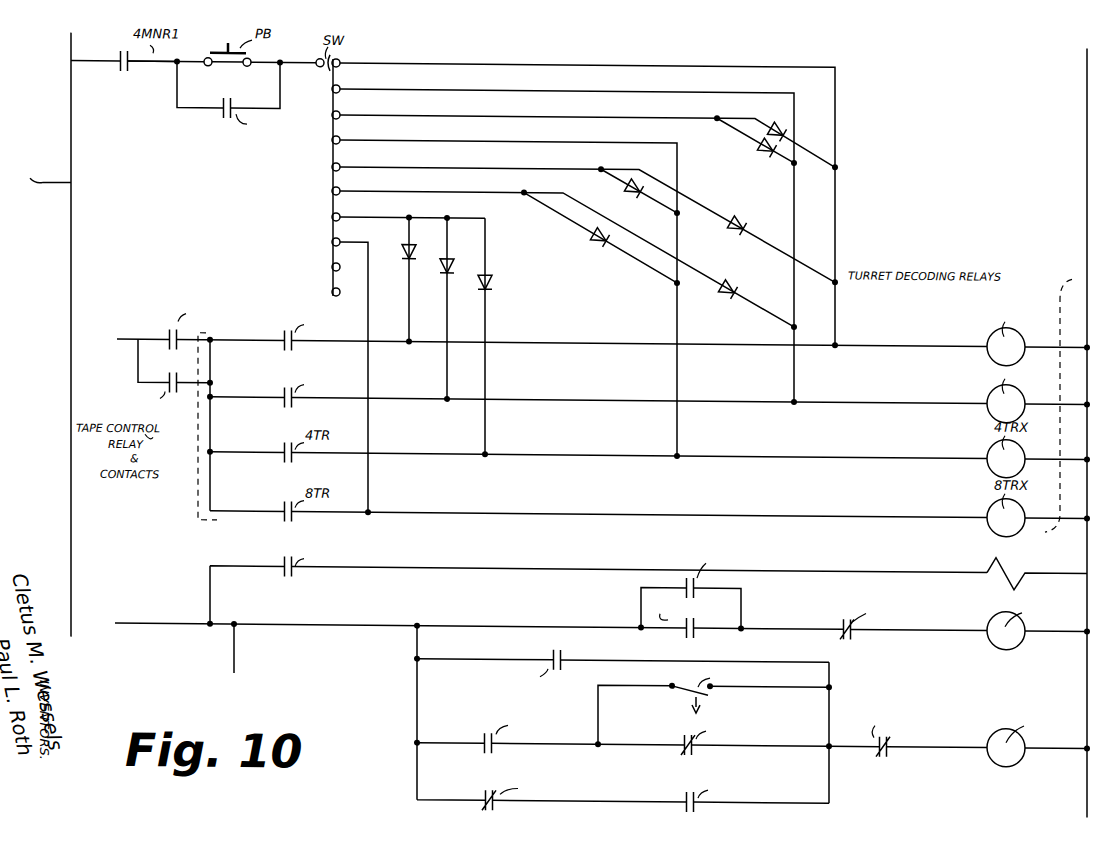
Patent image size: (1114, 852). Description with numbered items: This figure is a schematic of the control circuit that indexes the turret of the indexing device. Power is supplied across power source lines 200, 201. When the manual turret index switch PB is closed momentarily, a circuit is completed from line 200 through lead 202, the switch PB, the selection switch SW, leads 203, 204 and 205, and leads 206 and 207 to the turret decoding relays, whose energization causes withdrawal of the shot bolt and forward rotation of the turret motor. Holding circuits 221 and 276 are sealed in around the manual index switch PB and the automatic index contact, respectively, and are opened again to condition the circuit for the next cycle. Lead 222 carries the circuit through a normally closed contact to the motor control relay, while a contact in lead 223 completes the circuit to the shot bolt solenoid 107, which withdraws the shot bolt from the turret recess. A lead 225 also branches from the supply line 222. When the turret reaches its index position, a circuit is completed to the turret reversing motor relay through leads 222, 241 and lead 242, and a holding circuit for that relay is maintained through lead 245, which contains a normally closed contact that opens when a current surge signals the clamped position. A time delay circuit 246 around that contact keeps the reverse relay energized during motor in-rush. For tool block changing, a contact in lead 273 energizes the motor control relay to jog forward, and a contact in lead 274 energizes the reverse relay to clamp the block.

The solenoid 107 is at (1006, 557).
The power source line 200 is at (71, 52).
The power source line 201 is at (1087, 46).
The lead 202 is at (160, 63).
The lead 203 is at (469, 114).
The lead 204 is at (794, 208).
The lead 205 is at (835, 228).
The lead 206 is at (877, 395).
The lead 207 is at (905, 338).
The holding circuit 221 is at (213, 107).
The lead 222 is at (510, 622).
The lead 223 is at (446, 564).
The AC line terminal 225 is at (234, 666).
The lead 241 is at (417, 691).
The lead 242 is at (954, 732).
The lead 245 is at (576, 742).
The time delay circuit 246 is at (614, 680).
The lead 273 is at (741, 589).
The lead 274 is at (759, 655).
The holding circuit 276 is at (132, 364).